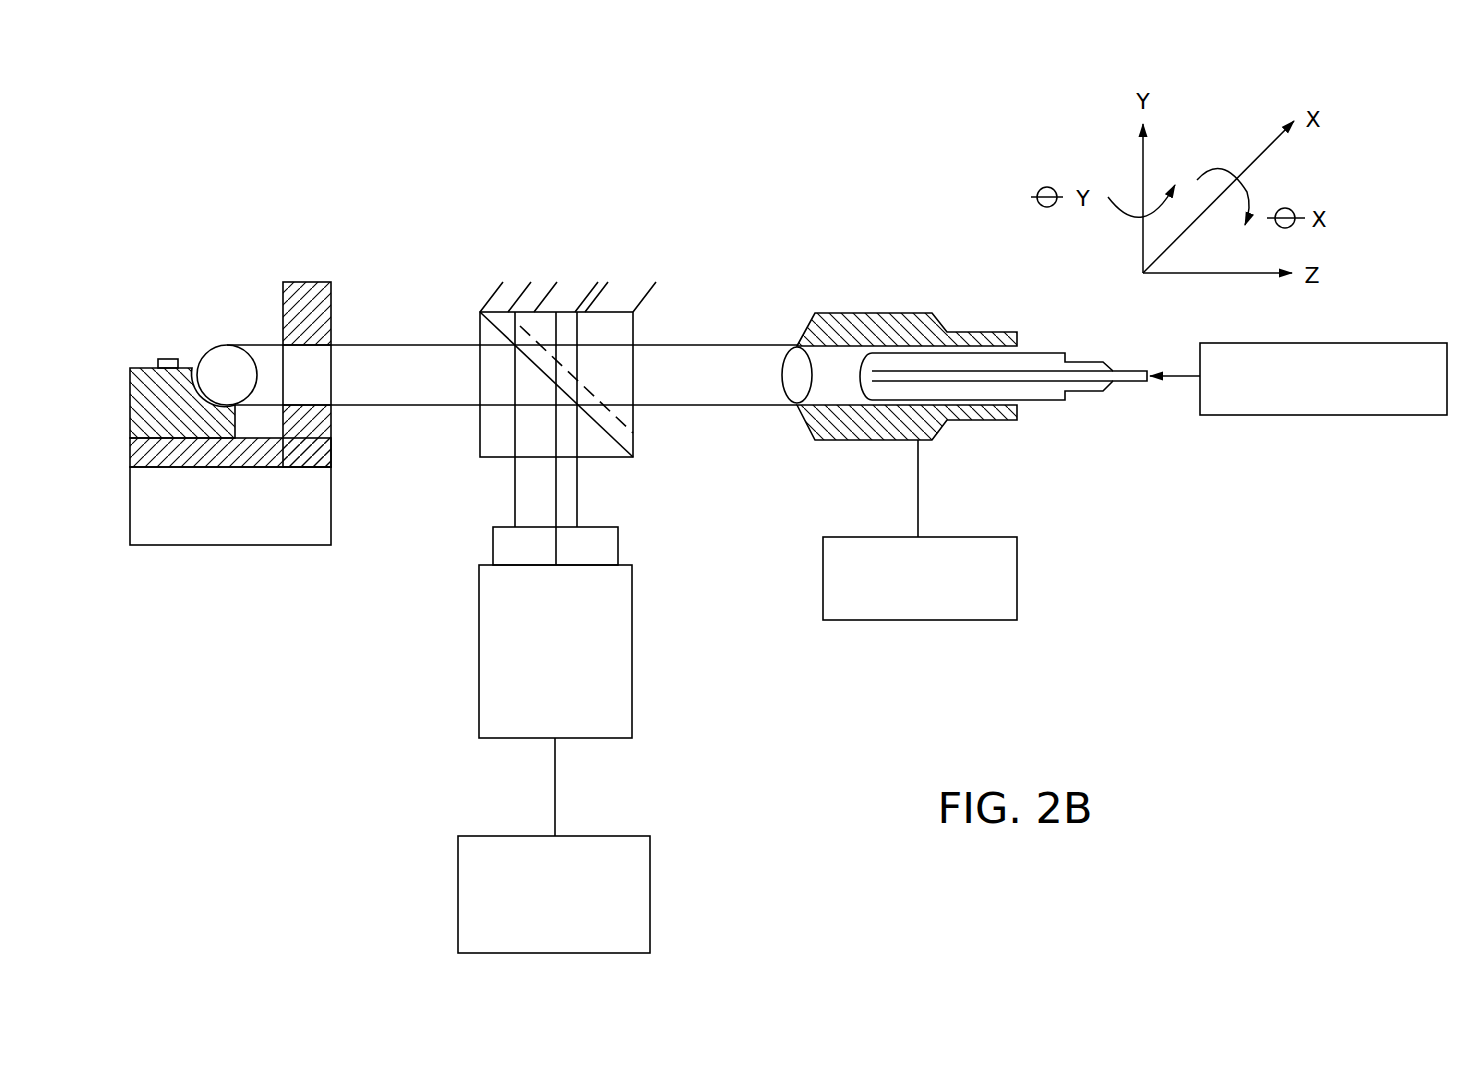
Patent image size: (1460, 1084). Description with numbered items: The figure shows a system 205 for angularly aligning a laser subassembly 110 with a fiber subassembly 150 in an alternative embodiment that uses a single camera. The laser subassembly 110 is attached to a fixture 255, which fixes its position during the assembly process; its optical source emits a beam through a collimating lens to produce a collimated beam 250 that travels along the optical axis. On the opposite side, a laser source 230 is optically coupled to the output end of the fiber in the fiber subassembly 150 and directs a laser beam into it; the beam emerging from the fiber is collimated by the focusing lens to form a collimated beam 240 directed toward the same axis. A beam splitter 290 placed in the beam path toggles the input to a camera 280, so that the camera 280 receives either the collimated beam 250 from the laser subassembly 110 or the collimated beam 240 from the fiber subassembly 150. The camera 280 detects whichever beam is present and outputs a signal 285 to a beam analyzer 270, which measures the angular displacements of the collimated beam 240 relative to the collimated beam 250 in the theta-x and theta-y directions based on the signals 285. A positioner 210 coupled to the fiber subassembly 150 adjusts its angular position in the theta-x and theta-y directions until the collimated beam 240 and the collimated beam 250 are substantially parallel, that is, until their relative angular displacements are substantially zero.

The laser subassembly 110 is at (172, 322).
The fiber subassembly 150 is at (842, 290).
The system 205 is at (394, 192).
The positioner 210 is at (907, 620).
The laser source 230 is at (1295, 415).
The collimated beam 240 is at (748, 406).
The collimated beam 250 is at (395, 406).
The fixture 255 is at (192, 545).
The beam analyzer 270 is at (650, 893).
The camera 280 is at (479, 688).
The signal 285 is at (555, 790).
The beam splitter 290 is at (536, 306).